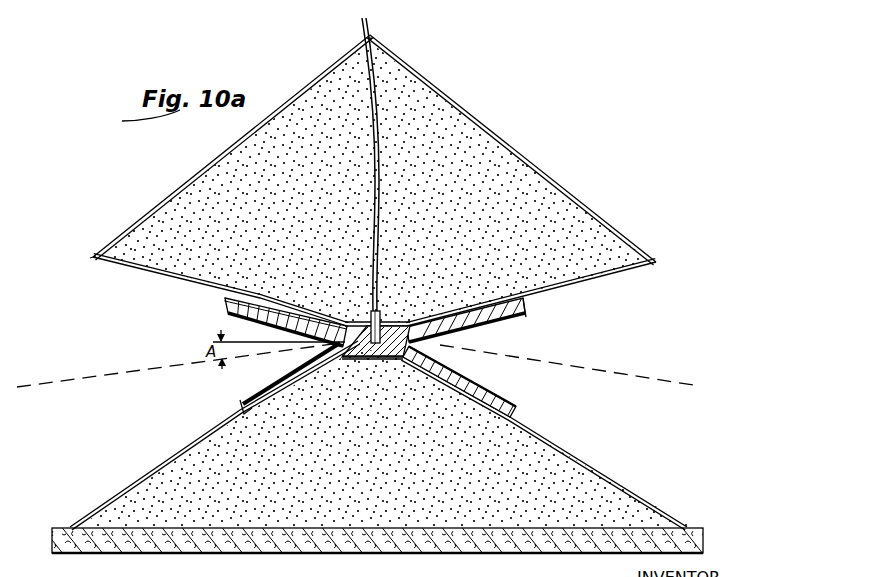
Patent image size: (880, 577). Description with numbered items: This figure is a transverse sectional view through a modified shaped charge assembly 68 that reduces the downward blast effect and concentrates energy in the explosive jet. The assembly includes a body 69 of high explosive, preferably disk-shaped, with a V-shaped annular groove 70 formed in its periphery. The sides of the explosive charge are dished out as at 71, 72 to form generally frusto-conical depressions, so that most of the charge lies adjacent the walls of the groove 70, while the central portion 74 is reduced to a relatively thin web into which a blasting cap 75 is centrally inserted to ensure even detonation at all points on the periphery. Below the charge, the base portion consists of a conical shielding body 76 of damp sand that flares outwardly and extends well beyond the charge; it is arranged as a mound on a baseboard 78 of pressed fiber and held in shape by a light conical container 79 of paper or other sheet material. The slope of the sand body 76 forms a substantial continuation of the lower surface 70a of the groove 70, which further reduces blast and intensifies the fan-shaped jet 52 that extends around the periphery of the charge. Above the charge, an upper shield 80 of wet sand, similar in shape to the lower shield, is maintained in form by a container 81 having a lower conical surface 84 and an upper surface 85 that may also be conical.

The charge assembly 68 is at (351, 190).
The upper shield 80 is at (210, 187).
The upper surface 85 is at (143, 216).
The container 81 is at (93, 258).
The lower conical surface 84 is at (140, 277).
The body of high explosive 69 is at (226, 300).
The dished-out side 71 is at (350, 323).
The blasting cap 75 is at (380, 312).
The central portion 74 is at (391, 349).
The dished-out side 72 is at (353, 360).
The jet 52 is at (135, 371).
The V-shaped annular groove 70 is at (247, 378).
The lower surface of the groove 70a is at (505, 404).
The conical container 79 is at (582, 461).
The conical shielding body 76 is at (380, 435).
The baseboard 78 is at (704, 535).